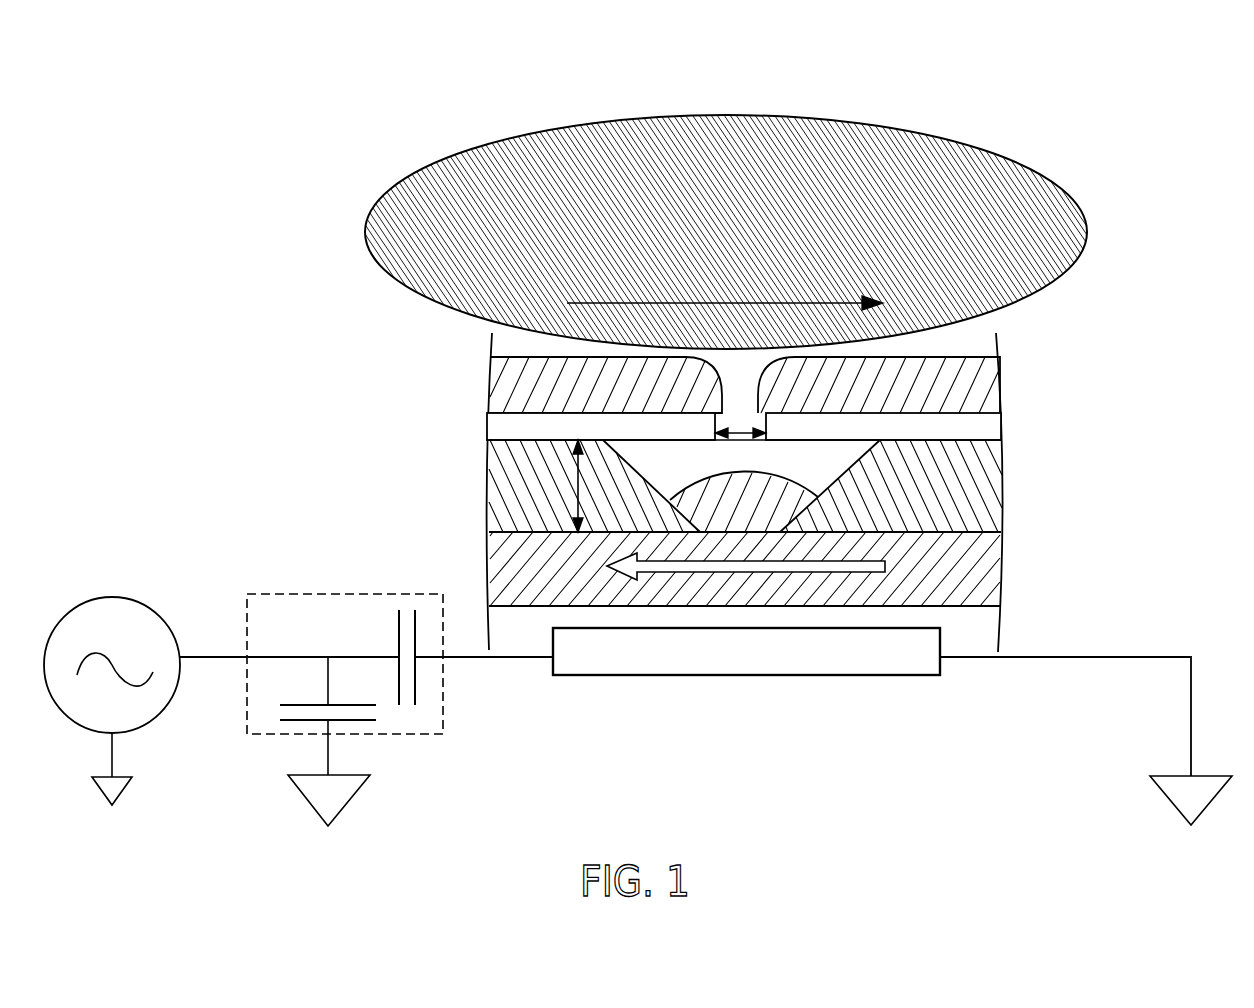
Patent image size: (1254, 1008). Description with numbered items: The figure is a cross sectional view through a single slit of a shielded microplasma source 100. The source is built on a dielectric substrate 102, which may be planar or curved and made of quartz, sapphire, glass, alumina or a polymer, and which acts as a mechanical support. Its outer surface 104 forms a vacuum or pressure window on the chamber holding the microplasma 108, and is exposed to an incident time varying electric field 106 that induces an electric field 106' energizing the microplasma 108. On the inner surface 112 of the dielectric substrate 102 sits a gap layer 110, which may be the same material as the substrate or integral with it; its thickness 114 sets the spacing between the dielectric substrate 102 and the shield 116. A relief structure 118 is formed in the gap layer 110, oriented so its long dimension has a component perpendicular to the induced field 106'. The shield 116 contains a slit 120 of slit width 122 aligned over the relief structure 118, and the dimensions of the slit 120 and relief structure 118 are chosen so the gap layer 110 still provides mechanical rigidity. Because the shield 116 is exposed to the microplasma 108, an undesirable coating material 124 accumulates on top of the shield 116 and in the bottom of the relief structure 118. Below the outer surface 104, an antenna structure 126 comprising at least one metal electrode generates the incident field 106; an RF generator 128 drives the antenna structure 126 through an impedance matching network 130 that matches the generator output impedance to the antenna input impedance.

The shielded microplasma source 100 is at (1000, 78).
The dielectric substrate 102 is at (982, 573).
The outer surface 104 is at (928, 607).
The incident time varying electric field 106 is at (746, 577).
The induced electric field 106' is at (725, 280).
The microplasma 108 is at (1030, 175).
The gap layer 110 is at (980, 484).
The inner surface 112 is at (906, 534).
The thickness 114 is at (575, 494).
The shield 116 is at (993, 430).
The relief structure 118 is at (700, 474).
The slit 120 is at (741, 404).
The slit width 122 is at (735, 437).
The coating material 124 is at (920, 360).
The antenna structure 126 is at (650, 668).
The RF generator 128 is at (118, 594).
The impedance matching network 130 is at (444, 715).